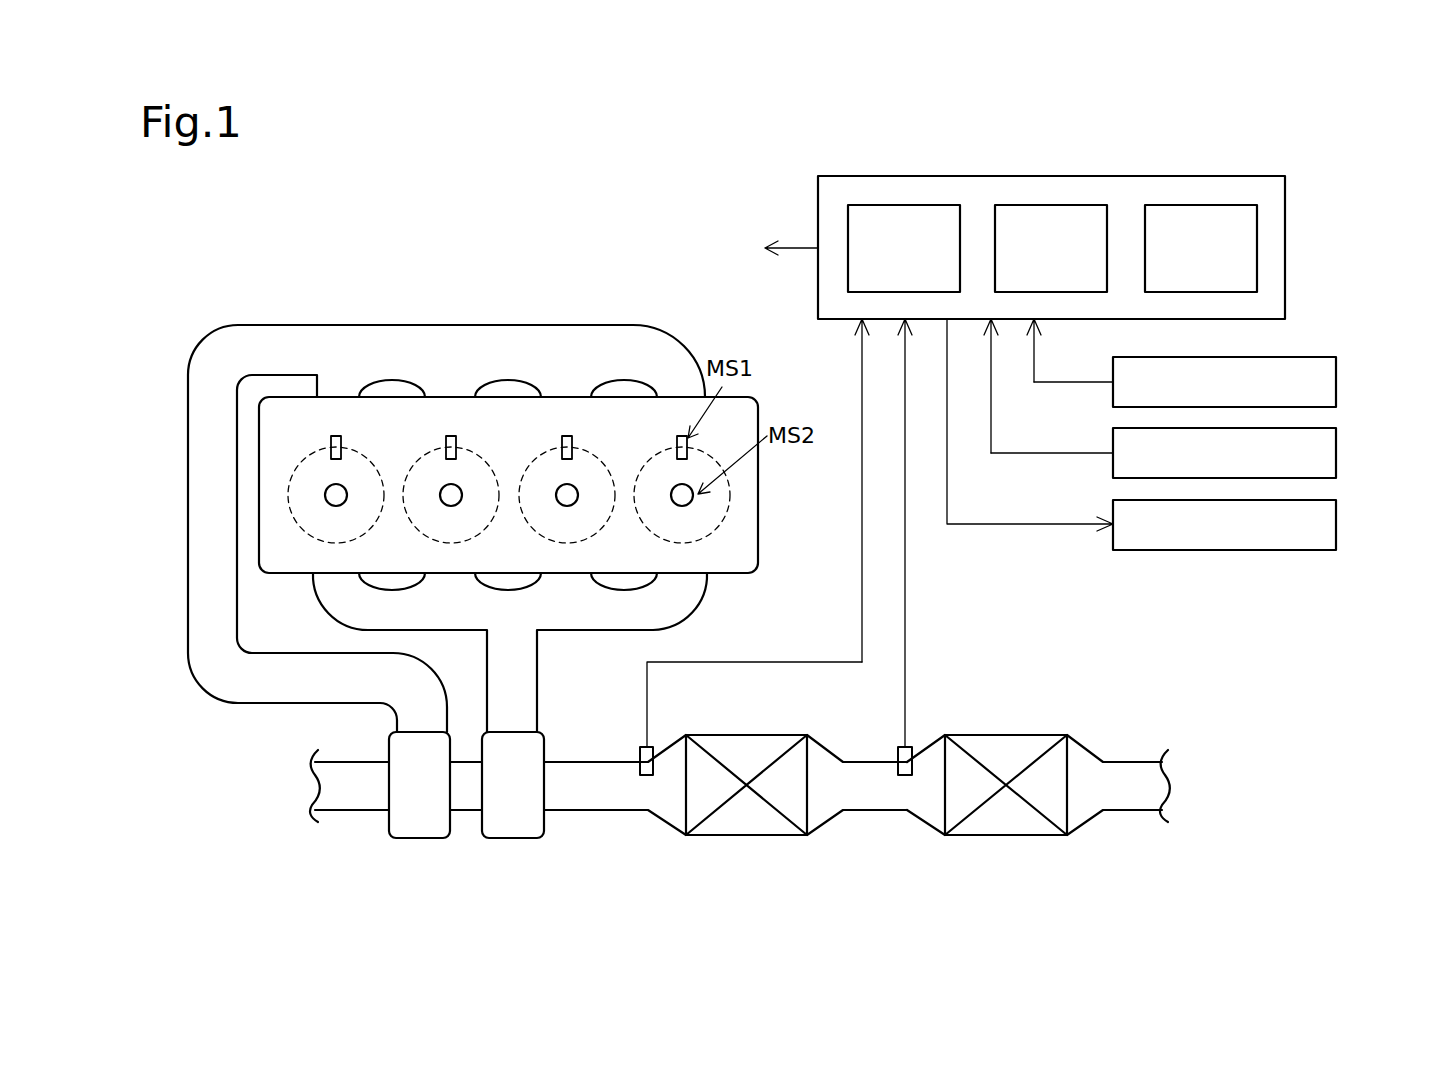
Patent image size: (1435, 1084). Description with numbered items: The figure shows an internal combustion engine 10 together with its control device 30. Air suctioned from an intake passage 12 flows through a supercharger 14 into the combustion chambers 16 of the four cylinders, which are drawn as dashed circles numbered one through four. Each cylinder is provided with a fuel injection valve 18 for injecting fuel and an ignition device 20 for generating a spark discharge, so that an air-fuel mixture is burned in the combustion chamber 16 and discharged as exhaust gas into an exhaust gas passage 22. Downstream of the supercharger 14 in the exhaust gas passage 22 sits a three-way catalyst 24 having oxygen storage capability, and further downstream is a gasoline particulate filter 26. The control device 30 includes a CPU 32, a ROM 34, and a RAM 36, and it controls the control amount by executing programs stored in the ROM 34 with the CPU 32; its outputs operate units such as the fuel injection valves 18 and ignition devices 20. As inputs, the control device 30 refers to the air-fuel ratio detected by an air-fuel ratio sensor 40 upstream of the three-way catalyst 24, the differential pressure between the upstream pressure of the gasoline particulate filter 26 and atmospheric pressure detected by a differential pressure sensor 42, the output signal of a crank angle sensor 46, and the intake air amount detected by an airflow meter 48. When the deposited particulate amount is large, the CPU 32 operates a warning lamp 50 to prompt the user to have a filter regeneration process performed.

The internal combustion engine 10 is at (565, 268).
The intake passage 12 is at (345, 800).
The supercharger 14 is at (468, 842).
The combustion chamber 16 is at (300, 480).
The fuel injection valve 18 is at (332, 436).
The ignition device 20 is at (347, 498).
The exhaust gas passage 22 is at (690, 605).
The three-way catalyst 24 is at (741, 823).
The gasoline particulate filter 26 is at (1001, 823).
The control device 30 is at (1262, 176).
The CPU 32 is at (903, 205).
The ROM 34 is at (1052, 205).
The RAM 36 is at (1200, 205).
The air-fuel ratio sensor 40 is at (642, 748).
The differential pressure sensor 42 is at (900, 748).
The crank angle sensor 46 is at (1336, 383).
The airflow meter 48 is at (1336, 454).
The warning lamp 50 is at (1336, 526).